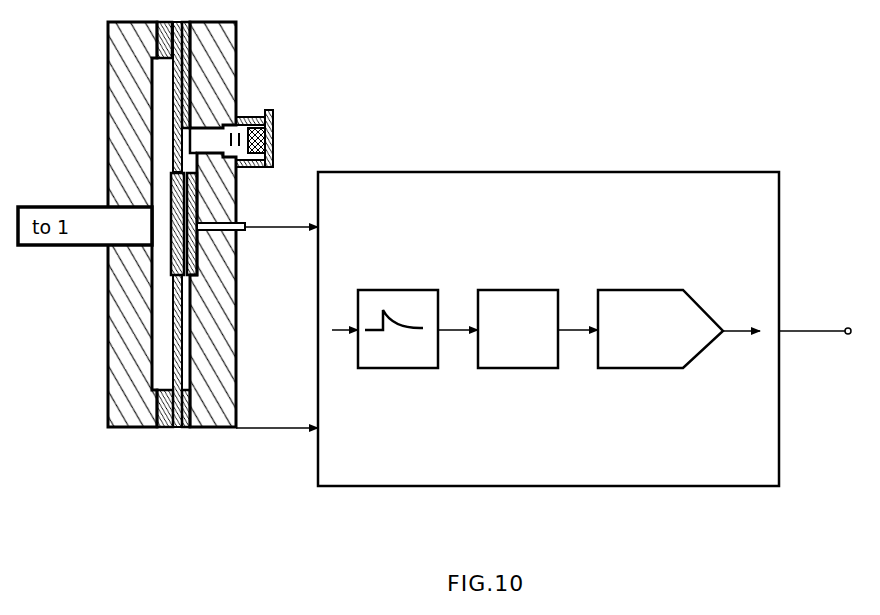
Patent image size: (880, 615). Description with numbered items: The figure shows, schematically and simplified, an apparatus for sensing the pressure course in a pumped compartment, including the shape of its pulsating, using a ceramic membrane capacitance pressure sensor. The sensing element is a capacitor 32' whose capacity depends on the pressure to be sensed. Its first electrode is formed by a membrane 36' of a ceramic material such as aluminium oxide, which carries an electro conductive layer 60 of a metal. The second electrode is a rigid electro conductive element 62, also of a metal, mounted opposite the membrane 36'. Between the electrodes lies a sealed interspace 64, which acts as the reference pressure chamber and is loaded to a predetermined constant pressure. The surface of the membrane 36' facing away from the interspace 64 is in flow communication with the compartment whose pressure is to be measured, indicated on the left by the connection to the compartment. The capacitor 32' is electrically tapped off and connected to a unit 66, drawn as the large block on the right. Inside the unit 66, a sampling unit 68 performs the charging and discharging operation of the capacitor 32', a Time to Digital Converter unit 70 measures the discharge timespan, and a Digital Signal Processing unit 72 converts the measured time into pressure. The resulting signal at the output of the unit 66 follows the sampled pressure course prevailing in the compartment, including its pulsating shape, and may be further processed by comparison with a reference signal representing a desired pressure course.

The membrane 36' is at (258, 97).
The capacitor 32' is at (125, 351).
The electro conductive layer 60 is at (175, 192).
The rigid electro conductive element 62 is at (195, 213).
The sealed interspace 64 is at (217, 138).
The unit 66 is at (535, 170).
The sampling unit 68 is at (400, 372).
The Time to Digital Converter unit 70 is at (518, 372).
The Digital Signal Processing (DSP) unit 72 is at (652, 370).